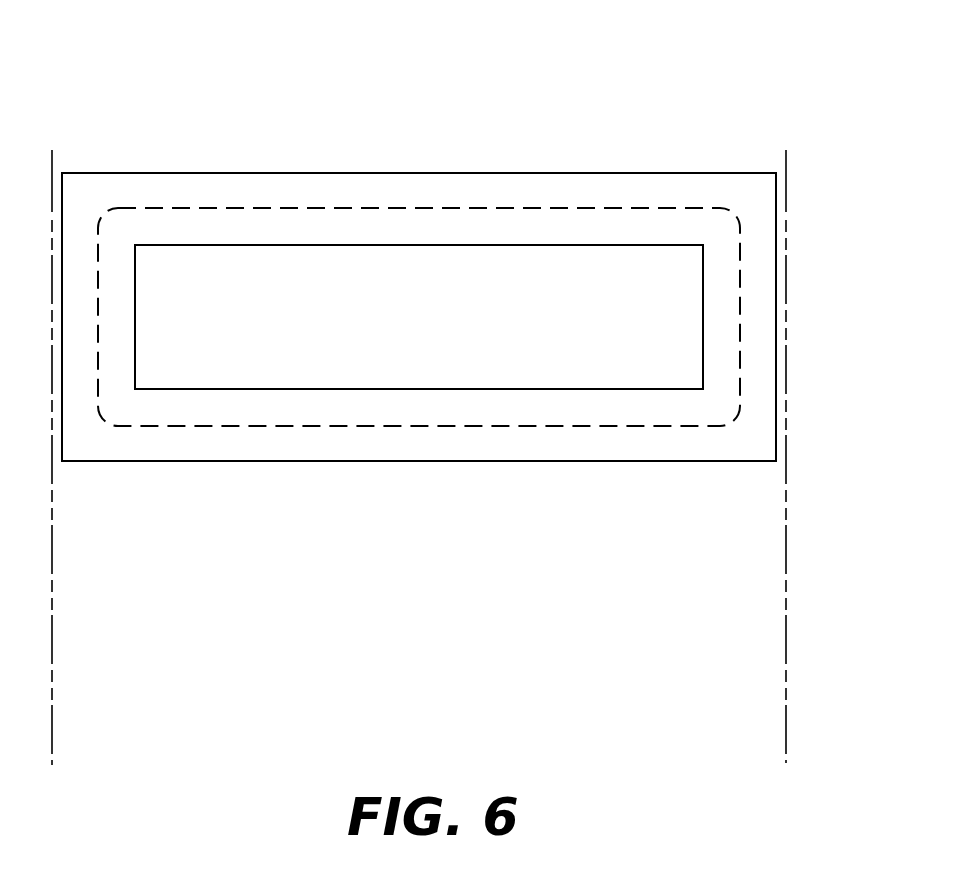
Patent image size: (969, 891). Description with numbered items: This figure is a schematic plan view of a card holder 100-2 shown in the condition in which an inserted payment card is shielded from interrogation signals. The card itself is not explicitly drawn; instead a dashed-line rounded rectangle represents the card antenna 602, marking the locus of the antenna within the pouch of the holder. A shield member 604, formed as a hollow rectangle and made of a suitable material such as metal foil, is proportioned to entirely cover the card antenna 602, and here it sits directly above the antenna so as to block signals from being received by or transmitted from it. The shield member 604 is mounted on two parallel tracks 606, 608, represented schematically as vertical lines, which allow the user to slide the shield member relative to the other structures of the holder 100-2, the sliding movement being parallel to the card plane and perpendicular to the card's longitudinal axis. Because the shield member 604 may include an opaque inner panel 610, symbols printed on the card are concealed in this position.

The card holder 100-2 is at (719, 102).
The card antenna 602 is at (630, 208).
The shield member 604 is at (556, 462).
The track 606 is at (786, 727).
The track 608 is at (52, 722).
The inner panel 610 is at (537, 279).